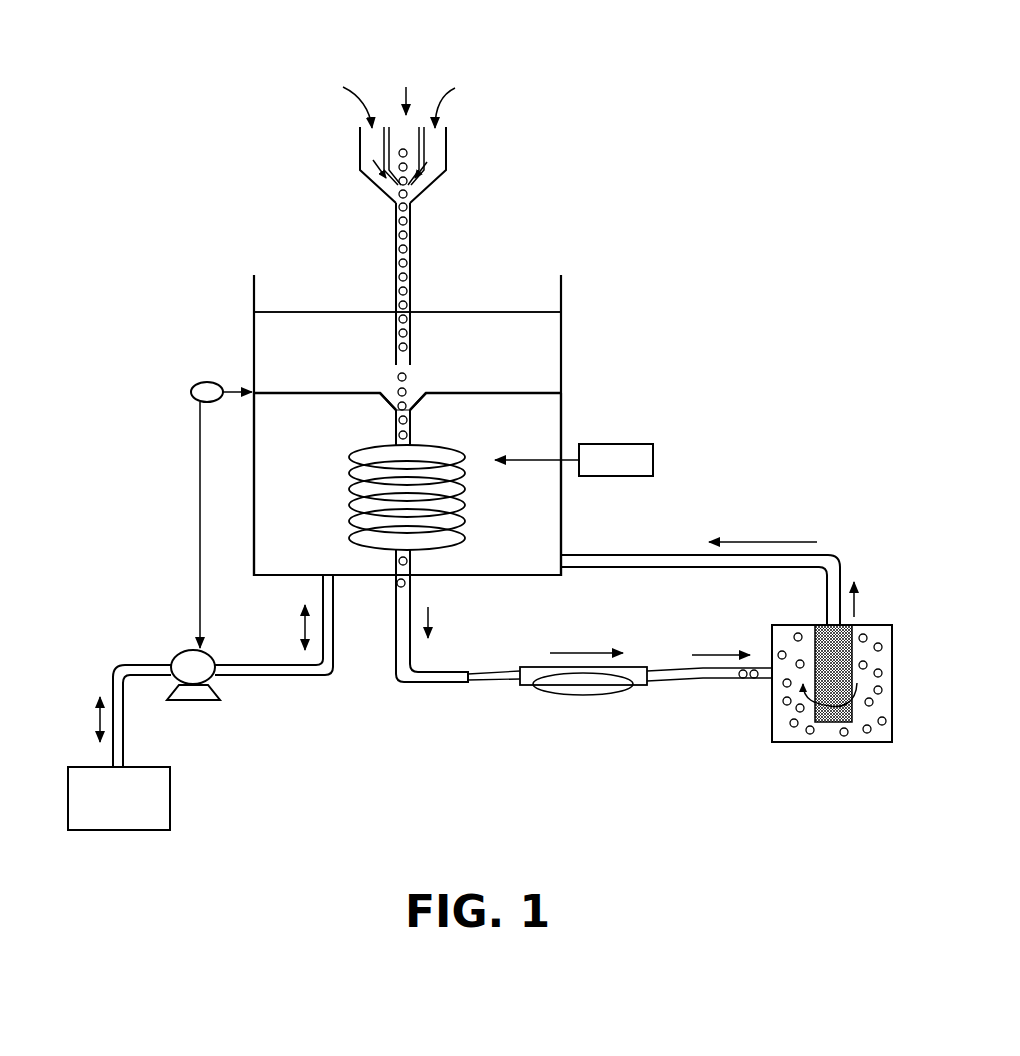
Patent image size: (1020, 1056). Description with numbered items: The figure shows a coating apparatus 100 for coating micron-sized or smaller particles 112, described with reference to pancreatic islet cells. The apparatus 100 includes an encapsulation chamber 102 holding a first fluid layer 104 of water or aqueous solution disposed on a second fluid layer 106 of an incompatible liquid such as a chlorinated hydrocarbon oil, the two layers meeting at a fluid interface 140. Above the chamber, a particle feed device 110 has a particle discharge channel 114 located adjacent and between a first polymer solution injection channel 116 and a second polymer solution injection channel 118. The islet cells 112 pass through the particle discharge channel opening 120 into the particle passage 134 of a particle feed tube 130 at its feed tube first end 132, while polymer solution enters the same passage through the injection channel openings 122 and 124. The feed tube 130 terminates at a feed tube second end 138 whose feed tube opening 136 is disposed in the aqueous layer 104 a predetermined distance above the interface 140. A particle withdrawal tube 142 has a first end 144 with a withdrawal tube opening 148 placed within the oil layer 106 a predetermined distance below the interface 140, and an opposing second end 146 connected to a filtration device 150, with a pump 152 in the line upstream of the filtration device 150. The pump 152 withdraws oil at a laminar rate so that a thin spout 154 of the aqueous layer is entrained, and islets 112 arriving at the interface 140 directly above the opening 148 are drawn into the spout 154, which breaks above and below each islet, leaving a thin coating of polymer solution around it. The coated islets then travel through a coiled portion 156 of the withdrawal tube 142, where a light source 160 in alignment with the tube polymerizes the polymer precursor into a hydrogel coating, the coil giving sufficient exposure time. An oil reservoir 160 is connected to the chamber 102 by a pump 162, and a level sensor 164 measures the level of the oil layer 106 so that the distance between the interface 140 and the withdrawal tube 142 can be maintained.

The coating apparatus 100 is at (739, 260).
The encapsulation chamber 102 is at (562, 293).
The first fluid layer 104 is at (543, 353).
The second fluid layer 106 is at (545, 437).
The particle feed device 110 is at (474, 176).
The particles 112 is at (410, 250).
The particle discharge channel 114 is at (418, 153).
The first polymer solution injection channel 116 is at (447, 165).
The second polymer solution injection channel 118 is at (368, 168).
The particle discharge channel opening 120 is at (398, 167).
The injection channel opening 122 is at (421, 194).
The injection channel opening 124 is at (386, 192).
The particle feed tube 130 is at (396, 258).
The feed tube first end 132 is at (396, 206).
The particle passage 134 is at (410, 288).
The feed tube opening 136 is at (410, 367).
The feed tube second end 138 is at (396, 355).
The fluid interface 140 is at (538, 393).
The particle withdrawal tube 142 is at (397, 430).
The first end 144 is at (411, 410).
The second end 146 is at (770, 680).
The withdrawal tube opening 148 is at (411, 398).
The filtration device 150 is at (772, 718).
The pump 152 is at (530, 667).
The spout 154 is at (395, 395).
The coiled portion 156 is at (353, 494).
The light source 160 is at (655, 458).
The pump 162 is at (180, 655).
The level sensor 164 is at (200, 385).